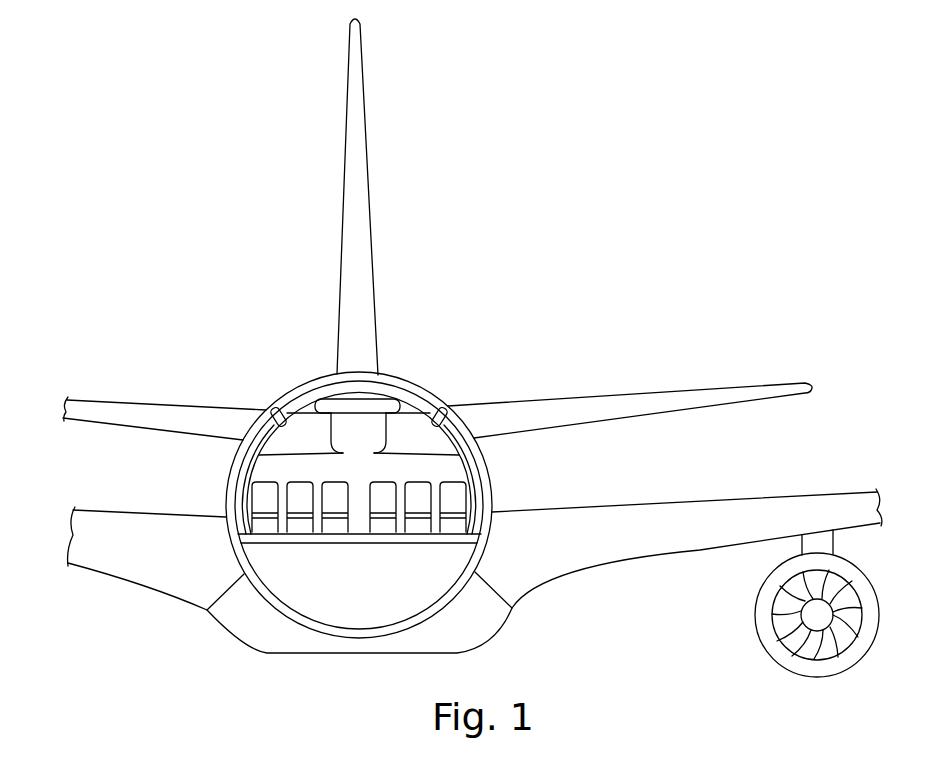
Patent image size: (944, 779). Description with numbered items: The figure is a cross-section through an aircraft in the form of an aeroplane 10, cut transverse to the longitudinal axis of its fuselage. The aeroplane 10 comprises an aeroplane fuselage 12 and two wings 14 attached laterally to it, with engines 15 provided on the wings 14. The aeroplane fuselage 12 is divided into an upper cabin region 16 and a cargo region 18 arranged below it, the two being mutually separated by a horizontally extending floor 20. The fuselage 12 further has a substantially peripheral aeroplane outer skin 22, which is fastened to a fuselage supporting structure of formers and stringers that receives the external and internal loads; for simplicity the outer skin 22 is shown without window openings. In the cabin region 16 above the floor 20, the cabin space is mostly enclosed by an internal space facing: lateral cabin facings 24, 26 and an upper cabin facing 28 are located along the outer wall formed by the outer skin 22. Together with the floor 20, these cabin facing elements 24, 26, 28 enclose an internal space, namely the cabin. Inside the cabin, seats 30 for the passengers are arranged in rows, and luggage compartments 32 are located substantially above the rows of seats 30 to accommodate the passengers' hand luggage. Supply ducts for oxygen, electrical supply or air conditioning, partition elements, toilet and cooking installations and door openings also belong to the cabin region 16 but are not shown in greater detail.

The aeroplane 10 is at (459, 364).
The aeroplane fuselage 12 is at (118, 442).
The wings 14 is at (654, 523).
The engines 15 is at (760, 642).
The cabin region 16 is at (373, 428).
The cargo region 18 is at (350, 613).
The floor 20 is at (481, 540).
The aeroplane outer skin 22 is at (424, 392).
The lateral cabin facing 24 is at (250, 461).
The lateral cabin facing 26 is at (490, 472).
The upper cabin facing 28 is at (331, 386).
The seats 30 is at (333, 498).
The luggage compartments 32 is at (421, 430).